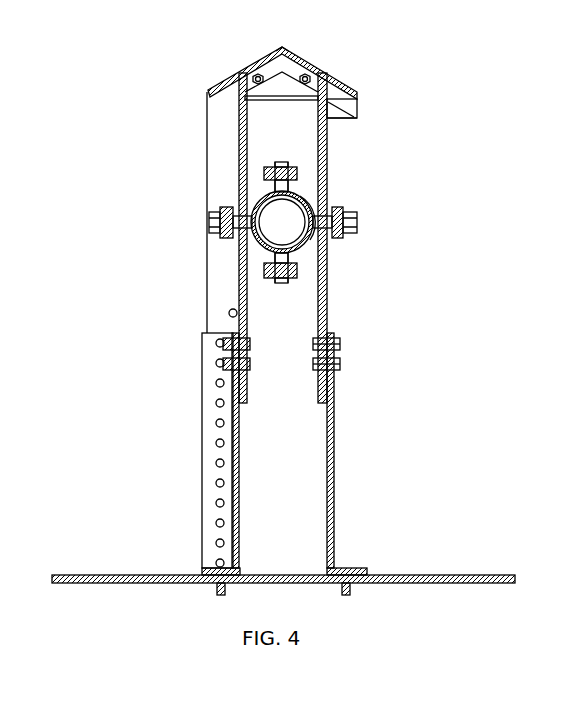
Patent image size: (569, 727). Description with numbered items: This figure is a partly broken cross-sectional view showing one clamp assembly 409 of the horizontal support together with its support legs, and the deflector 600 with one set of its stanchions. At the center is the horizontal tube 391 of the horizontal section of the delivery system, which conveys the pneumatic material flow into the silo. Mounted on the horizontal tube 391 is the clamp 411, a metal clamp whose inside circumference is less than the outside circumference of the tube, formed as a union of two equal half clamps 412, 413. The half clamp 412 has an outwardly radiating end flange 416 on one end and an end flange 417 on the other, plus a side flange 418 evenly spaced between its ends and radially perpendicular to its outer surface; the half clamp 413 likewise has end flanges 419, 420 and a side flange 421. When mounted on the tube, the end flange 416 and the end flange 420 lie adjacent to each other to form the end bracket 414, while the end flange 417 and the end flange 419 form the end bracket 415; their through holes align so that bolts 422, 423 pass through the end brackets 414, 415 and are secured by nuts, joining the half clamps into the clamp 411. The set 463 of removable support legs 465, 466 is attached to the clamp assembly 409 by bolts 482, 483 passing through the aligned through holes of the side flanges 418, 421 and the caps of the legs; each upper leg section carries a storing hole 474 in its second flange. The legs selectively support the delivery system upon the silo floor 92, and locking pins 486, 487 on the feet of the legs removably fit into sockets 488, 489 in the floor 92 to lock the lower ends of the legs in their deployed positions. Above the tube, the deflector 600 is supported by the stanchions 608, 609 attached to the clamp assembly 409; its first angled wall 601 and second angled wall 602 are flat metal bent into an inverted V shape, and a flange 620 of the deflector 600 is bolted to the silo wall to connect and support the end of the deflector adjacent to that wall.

The deflector 600 is at (308, 87).
The first angled wall 601 is at (278, 57).
The second angled wall 602 is at (332, 66).
The flange 620 is at (357, 105).
The stanchion 609 is at (356, 119).
The stanchion 608 is at (207, 137).
The half clamp 412 is at (239, 172).
The end flange 416 is at (275, 167).
The end flange 420 is at (298, 170).
The bolt 422 is at (297, 173).
The end bracket 414 is at (344, 130).
The clamp assembly 409 is at (162, 202).
The bolt 482 is at (220, 208).
The side flange 418 is at (210, 222).
The horizontal tube 391 is at (250, 249).
The bolt 423 is at (265, 272).
The end flange 417 is at (272, 282).
The end flange 419 is at (292, 279).
The end bracket 415 is at (268, 292).
The half clamp 413 is at (312, 242).
The side flange 421 is at (357, 220).
The clamp 411 is at (402, 214).
The bolt 483 is at (338, 207).
The storing hole 474 is at (229, 316).
The set of removable support legs 463 is at (318, 450).
The removable support leg 465 is at (202, 430).
The removable support leg 466 is at (335, 422).
The floor 92 is at (112, 577).
The socket 488 is at (210, 580).
The socket 489 is at (352, 585).
The locking pin 486 is at (218, 596).
The locking pin 487 is at (349, 596).